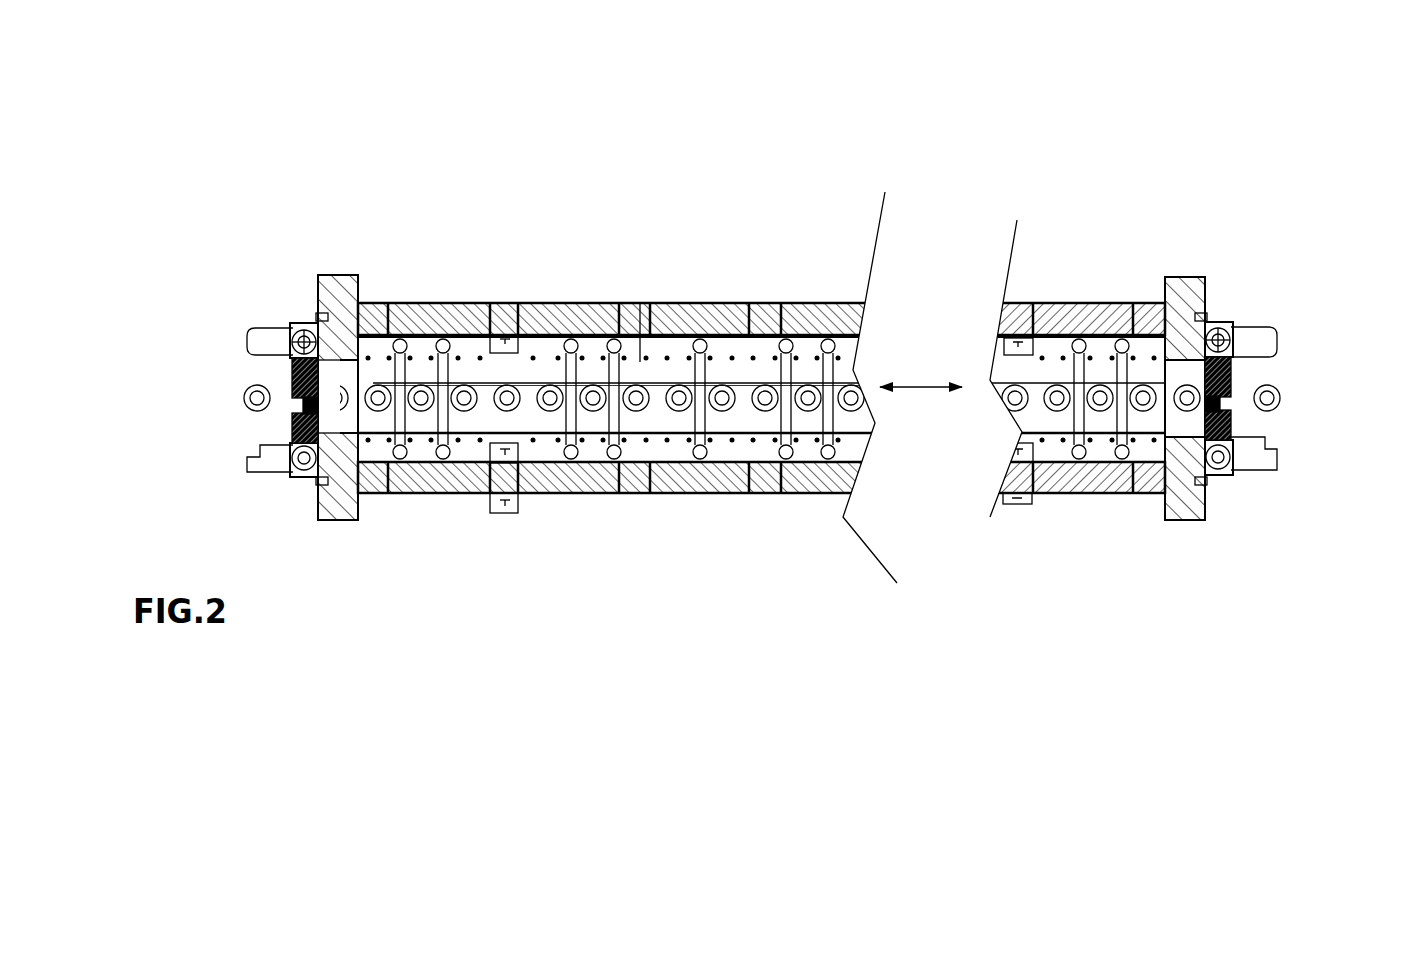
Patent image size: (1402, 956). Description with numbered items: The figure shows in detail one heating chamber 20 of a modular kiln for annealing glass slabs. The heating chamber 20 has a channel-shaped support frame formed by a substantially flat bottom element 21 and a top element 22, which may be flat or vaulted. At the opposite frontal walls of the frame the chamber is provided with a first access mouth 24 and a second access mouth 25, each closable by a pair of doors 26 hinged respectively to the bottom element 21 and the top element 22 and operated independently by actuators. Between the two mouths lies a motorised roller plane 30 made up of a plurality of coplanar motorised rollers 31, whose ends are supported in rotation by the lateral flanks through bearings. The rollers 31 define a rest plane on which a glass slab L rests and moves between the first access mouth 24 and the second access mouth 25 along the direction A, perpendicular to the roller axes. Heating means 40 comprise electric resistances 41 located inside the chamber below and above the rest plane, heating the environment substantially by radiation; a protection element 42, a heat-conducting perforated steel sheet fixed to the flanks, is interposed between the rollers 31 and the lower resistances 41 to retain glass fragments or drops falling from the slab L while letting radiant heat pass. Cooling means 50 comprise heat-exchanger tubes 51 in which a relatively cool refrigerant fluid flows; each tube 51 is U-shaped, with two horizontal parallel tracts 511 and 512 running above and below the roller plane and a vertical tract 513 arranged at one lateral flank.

The heating chamber 20 is at (247, 182).
The bottom element 21 is at (618, 477).
The top element 22 is at (740, 305).
The first access mouth 24 is at (320, 388).
The second access mouth 25 is at (1233, 327).
The doors 26 is at (290, 370).
The motorised roller plane 30 is at (243, 396).
The motorised rollers 31 is at (593, 398).
The heating means 40 is at (603, 358).
The electric resistances 41 is at (614, 399).
The protection element 42 is at (619, 438).
The cooling means 50 is at (1062, 278).
The heat-exchanger tubes 51 is at (584, 398).
The upper parallel tract 511 is at (504, 344).
The lower parallel tract 512 is at (504, 453).
The vertical tract 513 is at (565, 408).
The glass slab L is at (626, 384).
The direction A is at (920, 385).